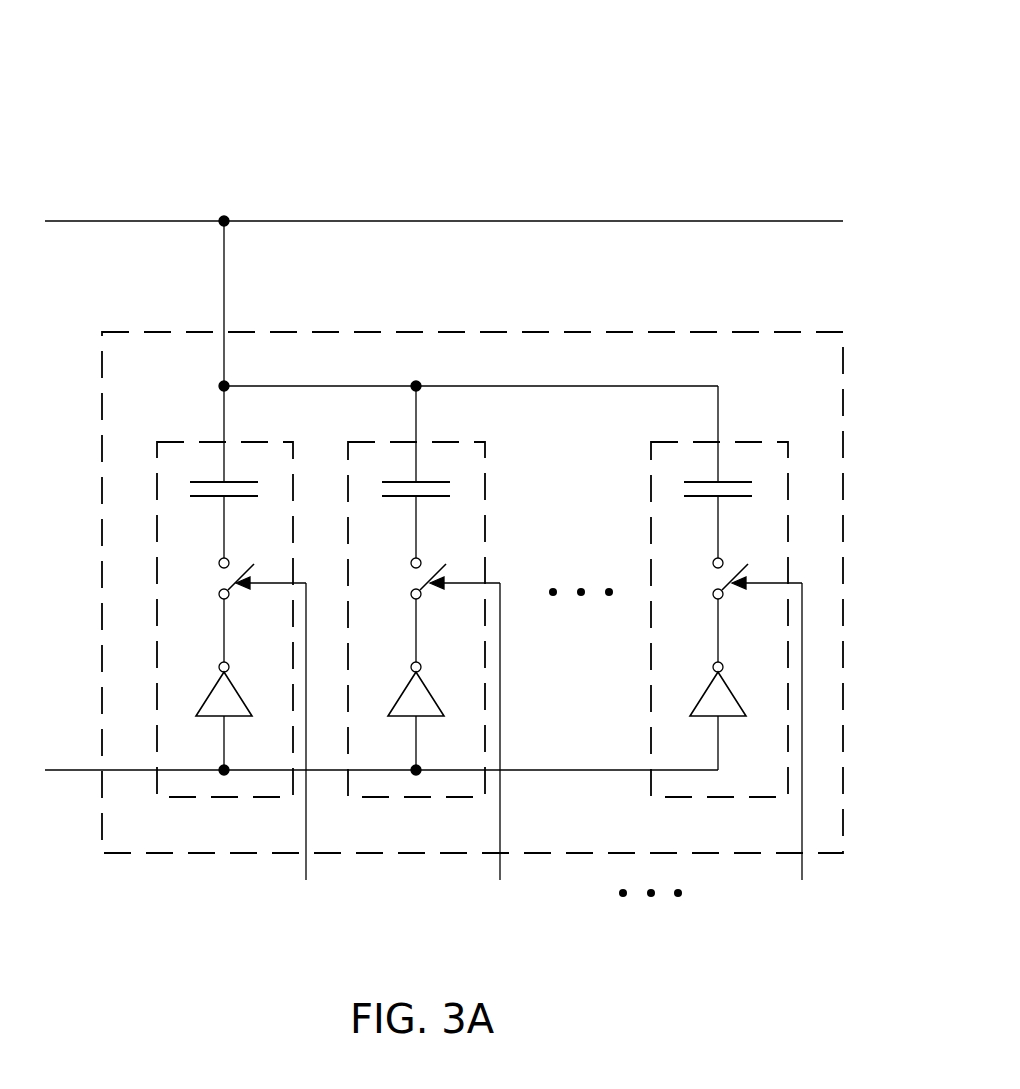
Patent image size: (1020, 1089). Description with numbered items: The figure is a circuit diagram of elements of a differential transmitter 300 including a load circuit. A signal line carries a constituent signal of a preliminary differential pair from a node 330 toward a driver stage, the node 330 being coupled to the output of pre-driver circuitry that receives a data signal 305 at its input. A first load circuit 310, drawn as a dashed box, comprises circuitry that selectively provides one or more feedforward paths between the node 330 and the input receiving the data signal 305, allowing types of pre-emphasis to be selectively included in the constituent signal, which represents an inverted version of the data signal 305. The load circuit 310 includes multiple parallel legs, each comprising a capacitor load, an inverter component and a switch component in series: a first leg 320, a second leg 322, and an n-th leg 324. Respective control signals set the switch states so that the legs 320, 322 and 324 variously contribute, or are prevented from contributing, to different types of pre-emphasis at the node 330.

The differential transmitter 300 is at (686, 100).
The node 330 is at (226, 200).
The first load circuit 310 is at (472, 606).
The data signal 305 is at (372, 760).
The leg 320 is at (240, 646).
The leg 322 is at (432, 646).
The leg 324 is at (735, 646).